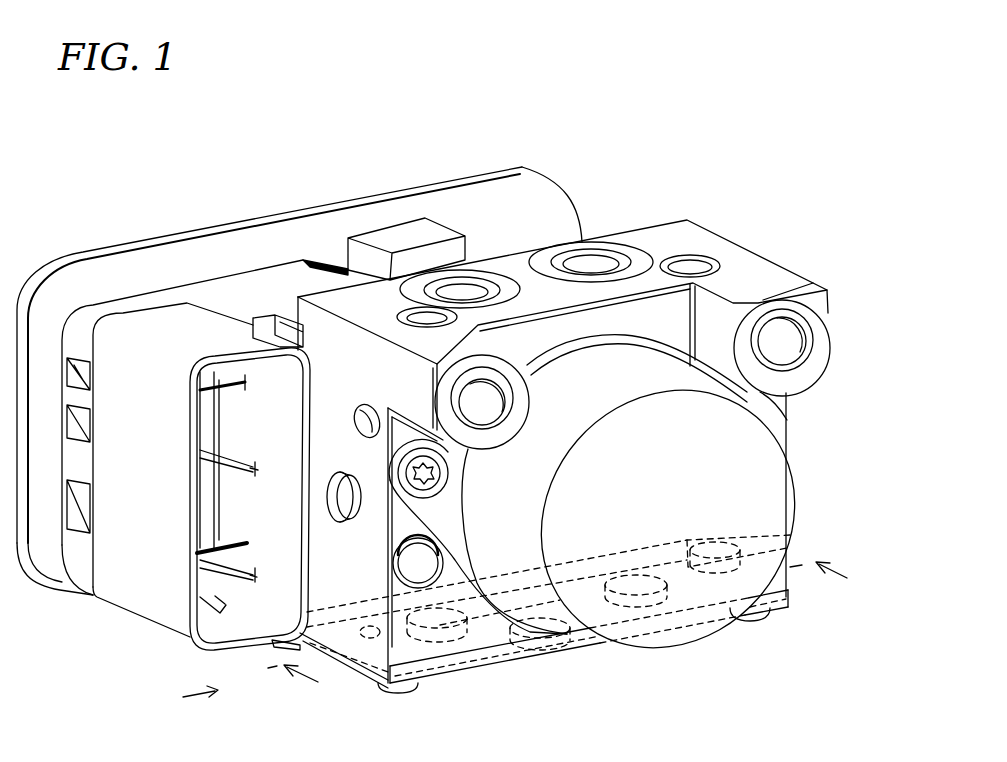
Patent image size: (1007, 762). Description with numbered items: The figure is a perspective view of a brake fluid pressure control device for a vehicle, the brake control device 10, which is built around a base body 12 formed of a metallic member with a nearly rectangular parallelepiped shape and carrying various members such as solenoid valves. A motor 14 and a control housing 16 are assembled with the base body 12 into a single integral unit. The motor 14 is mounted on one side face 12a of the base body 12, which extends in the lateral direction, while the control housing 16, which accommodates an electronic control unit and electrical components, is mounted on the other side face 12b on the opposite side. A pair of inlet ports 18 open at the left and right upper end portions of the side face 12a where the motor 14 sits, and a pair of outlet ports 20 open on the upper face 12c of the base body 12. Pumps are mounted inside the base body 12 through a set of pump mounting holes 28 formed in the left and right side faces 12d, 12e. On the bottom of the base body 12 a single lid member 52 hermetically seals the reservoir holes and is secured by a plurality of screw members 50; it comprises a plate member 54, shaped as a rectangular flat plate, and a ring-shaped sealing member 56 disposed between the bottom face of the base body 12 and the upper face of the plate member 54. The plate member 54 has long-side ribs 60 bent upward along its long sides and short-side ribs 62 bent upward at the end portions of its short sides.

The brake control device 10 is at (697, 138).
The base body 12 is at (747, 243).
The one side face 12a is at (413, 523).
The other side face 12b is at (644, 232).
The upper face 12c is at (360, 305).
The left side face 12d is at (337, 430).
The right side face 12e is at (787, 438).
The motor 14 is at (797, 497).
The control housing 16 is at (179, 225).
The inlet ports 18 is at (785, 343).
The outlet ports 20 is at (567, 262).
The pump mounting holes 28 is at (350, 497).
The screw members 50 is at (397, 683).
The lid member 52 is at (519, 670).
The plate member 54 is at (567, 658).
The sealing member 56 is at (790, 536).
The long-side ribs 60 is at (481, 653).
The short-side ribs 62 is at (347, 665).